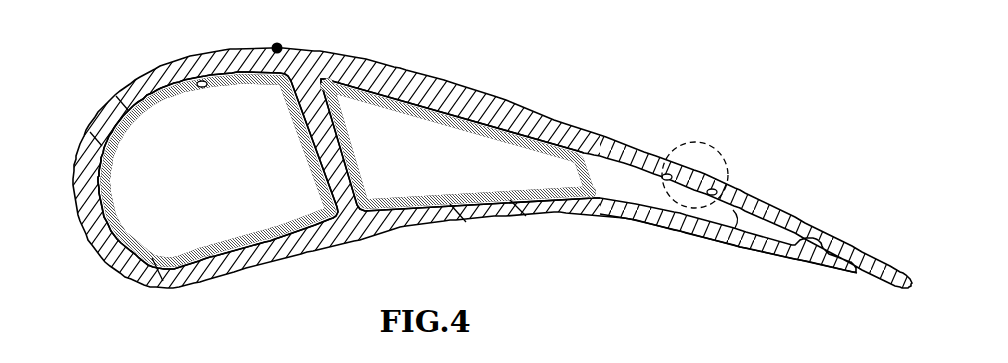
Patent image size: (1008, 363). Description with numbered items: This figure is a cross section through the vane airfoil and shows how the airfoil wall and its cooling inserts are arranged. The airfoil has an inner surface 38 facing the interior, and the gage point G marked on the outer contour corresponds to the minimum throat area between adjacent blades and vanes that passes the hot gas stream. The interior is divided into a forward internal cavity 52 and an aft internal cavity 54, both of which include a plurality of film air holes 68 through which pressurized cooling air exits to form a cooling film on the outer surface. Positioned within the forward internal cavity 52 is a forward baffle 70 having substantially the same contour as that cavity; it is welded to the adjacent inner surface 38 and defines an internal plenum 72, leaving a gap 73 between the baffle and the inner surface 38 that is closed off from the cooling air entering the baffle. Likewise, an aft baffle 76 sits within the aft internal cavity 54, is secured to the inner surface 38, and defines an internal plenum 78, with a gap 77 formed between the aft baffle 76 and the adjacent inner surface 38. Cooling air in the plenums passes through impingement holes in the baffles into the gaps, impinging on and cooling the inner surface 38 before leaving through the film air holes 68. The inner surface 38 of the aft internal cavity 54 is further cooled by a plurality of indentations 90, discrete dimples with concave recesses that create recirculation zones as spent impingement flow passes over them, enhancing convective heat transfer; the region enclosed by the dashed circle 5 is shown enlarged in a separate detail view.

The detail region shown in FIG. 5 is at (716, 145).
The gage point G is at (281, 42).
The inner surface 38 is at (138, 112).
The forward internal cavity 52 is at (200, 81).
The aft internal cavity 54 is at (612, 200).
The film air holes 68 is at (490, 179).
The forward baffle 70 is at (106, 126).
The internal plenum 72 is at (186, 178).
The gap 73 is at (150, 258).
The aft baffle 76 is at (605, 143).
The gap 77 is at (490, 197).
The internal plenum 78 is at (418, 165).
The indentations 90 is at (664, 189).